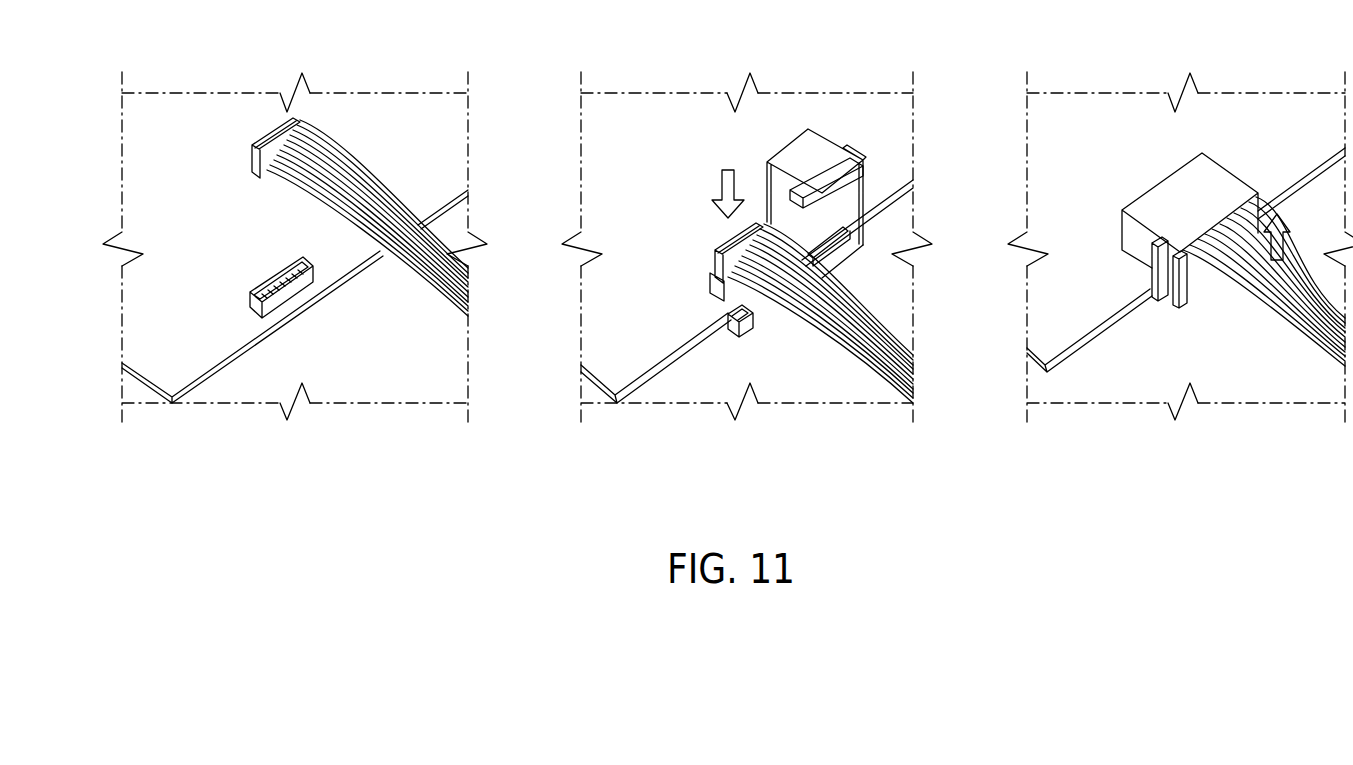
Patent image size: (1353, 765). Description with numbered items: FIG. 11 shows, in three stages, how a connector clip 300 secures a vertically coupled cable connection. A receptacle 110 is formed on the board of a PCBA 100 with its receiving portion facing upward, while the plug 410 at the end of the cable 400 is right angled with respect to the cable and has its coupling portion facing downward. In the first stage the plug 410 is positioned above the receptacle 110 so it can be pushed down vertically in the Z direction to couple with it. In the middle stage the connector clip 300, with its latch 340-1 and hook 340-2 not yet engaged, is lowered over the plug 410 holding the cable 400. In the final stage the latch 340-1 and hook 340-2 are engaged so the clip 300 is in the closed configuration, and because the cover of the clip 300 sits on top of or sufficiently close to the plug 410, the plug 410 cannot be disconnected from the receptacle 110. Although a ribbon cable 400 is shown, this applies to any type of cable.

The PCBA 100 is at (190, 366).
The receptacle 110 is at (288, 296).
The connector clip 300 is at (1240, 168).
The latch 340-1 is at (735, 327).
The hook 340-2 is at (862, 184).
The cable 400 is at (432, 288).
The plug 410 is at (266, 122).